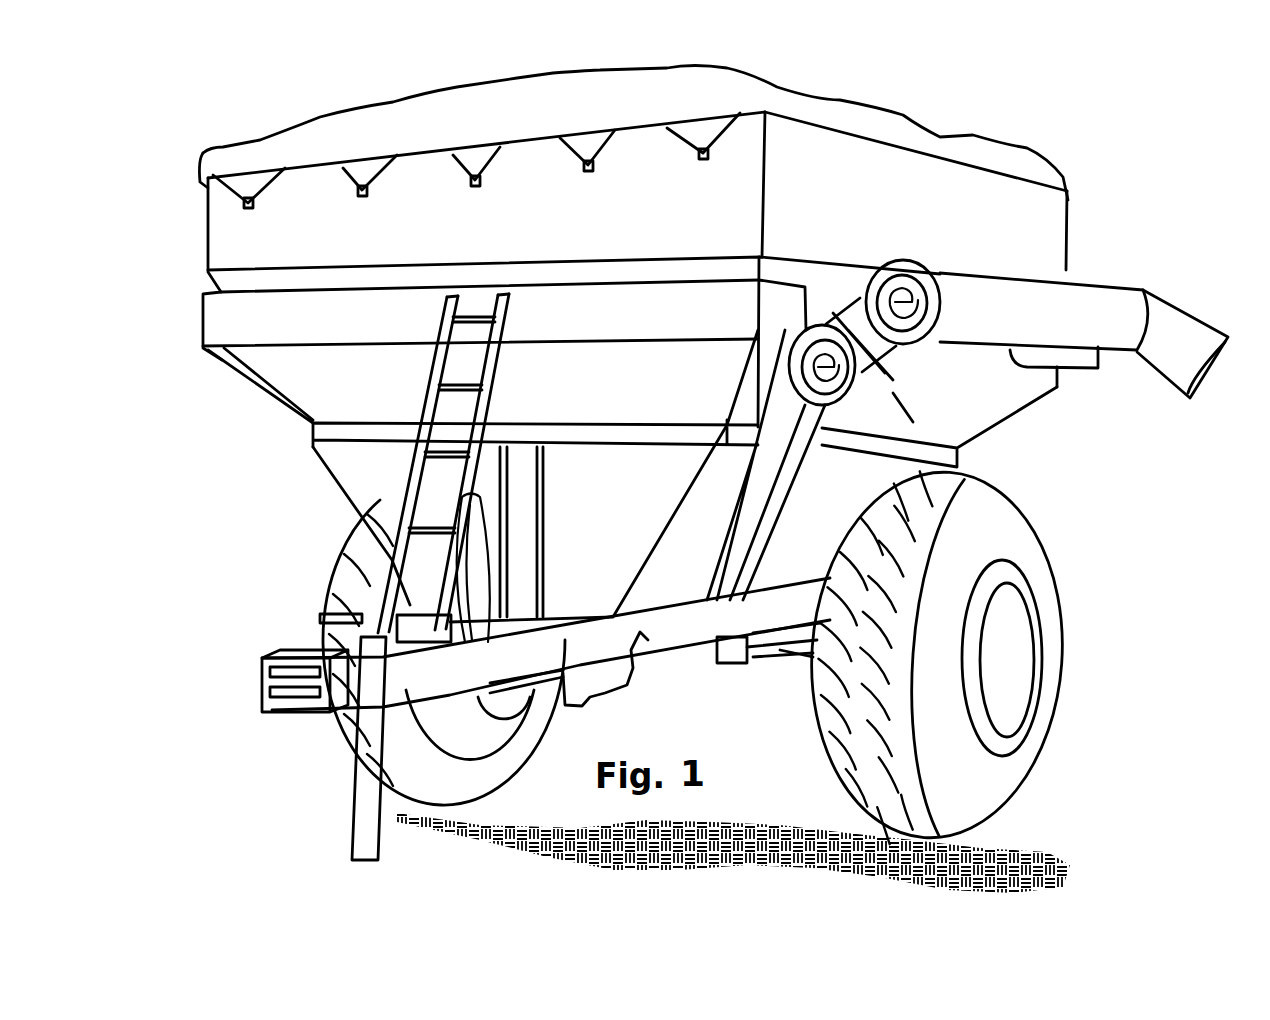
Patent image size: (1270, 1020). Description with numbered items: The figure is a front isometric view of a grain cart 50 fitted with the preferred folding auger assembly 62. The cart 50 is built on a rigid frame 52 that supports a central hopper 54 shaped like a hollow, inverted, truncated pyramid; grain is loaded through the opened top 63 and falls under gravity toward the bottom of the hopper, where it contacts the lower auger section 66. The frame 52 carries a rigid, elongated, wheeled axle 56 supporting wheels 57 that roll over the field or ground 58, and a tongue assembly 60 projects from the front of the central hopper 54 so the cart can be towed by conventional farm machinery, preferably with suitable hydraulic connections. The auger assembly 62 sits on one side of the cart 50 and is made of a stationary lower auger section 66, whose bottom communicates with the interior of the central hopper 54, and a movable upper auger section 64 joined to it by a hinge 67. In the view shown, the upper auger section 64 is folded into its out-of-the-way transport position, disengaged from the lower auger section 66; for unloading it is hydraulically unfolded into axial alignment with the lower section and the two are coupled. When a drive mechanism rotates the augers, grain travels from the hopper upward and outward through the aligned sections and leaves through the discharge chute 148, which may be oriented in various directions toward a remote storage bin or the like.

The grain cart 50 is at (993, 123).
The rigid frame 52 is at (648, 640).
The central hopper 54 is at (262, 393).
The wheeled axle 56 is at (767, 657).
The wheels 57 is at (1060, 597).
The ground 58 is at (1013, 847).
The tongue assembly 60 is at (300, 633).
The auger assembly 62 is at (1187, 293).
The opened top 63 is at (822, 227).
The upper auger section 64 is at (993, 277).
The lower auger section 66 is at (764, 500).
The hinge 67 is at (913, 422).
The discharge chute 148 is at (1148, 365).